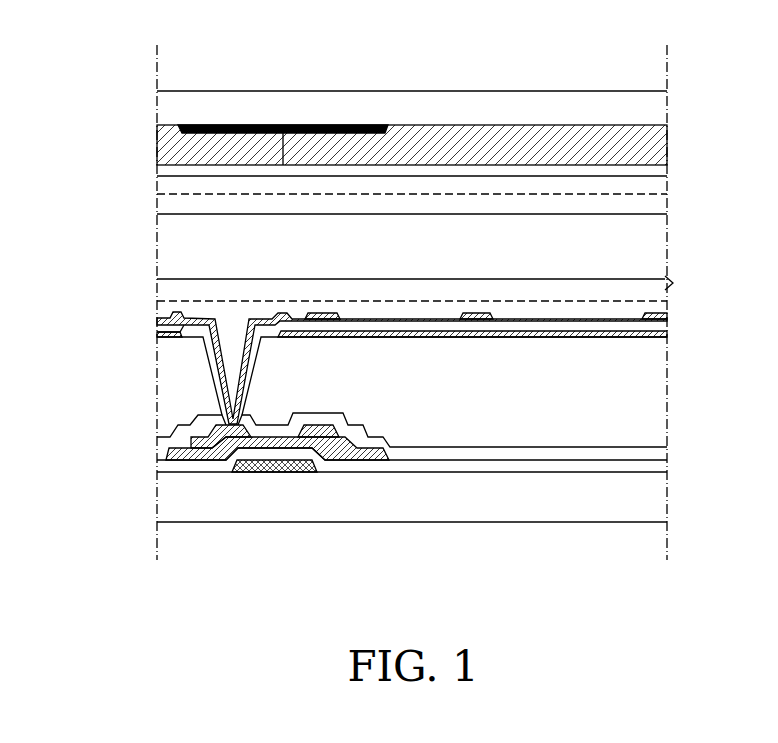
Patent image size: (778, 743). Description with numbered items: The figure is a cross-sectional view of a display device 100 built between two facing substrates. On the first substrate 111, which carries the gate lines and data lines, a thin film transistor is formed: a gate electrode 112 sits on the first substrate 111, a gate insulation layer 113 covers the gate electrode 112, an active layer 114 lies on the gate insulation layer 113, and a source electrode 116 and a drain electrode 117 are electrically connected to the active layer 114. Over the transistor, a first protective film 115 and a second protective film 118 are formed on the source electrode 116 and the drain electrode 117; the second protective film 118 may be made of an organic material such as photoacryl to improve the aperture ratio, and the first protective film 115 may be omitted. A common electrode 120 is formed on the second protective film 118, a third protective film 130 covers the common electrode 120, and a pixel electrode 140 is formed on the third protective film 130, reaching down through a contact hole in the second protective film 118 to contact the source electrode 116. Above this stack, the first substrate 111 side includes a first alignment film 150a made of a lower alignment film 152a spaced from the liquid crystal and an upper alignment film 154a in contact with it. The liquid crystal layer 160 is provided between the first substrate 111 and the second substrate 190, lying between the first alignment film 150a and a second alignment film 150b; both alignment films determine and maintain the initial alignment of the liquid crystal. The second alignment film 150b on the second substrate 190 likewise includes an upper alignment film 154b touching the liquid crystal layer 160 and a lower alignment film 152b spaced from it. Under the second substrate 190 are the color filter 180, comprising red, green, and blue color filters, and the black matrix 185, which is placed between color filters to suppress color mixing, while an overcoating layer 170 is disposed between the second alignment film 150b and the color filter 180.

The display device 100 is at (653, 21).
The first substrate 111 is at (172, 496).
The gate electrode 112 is at (250, 466).
The gate insulation layer 113 is at (170, 465).
The active layer 114 is at (288, 438).
The first protective film 115 is at (168, 440).
The source electrode 116 is at (200, 440).
The drain electrode 117 is at (345, 438).
The second protective film 118 is at (172, 393).
The common electrode 120 is at (163, 340).
The third protective film 130 is at (163, 326).
The pixel electrode 140 is at (172, 314).
The first alignment film 150a is at (85, 262).
The lower alignment film 152a is at (165, 303).
The upper alignment film 154a is at (170, 287).
The liquid crystal layer 160 is at (172, 246).
The second alignment film 150b is at (85, 179).
The lower alignment film 152b is at (163, 185).
The upper alignment film 154b is at (163, 206).
The overcoating layer 170 is at (158, 161).
The color filter 180 is at (297, 148).
The black matrix 185 is at (307, 130).
The second substrate 190 is at (172, 108).